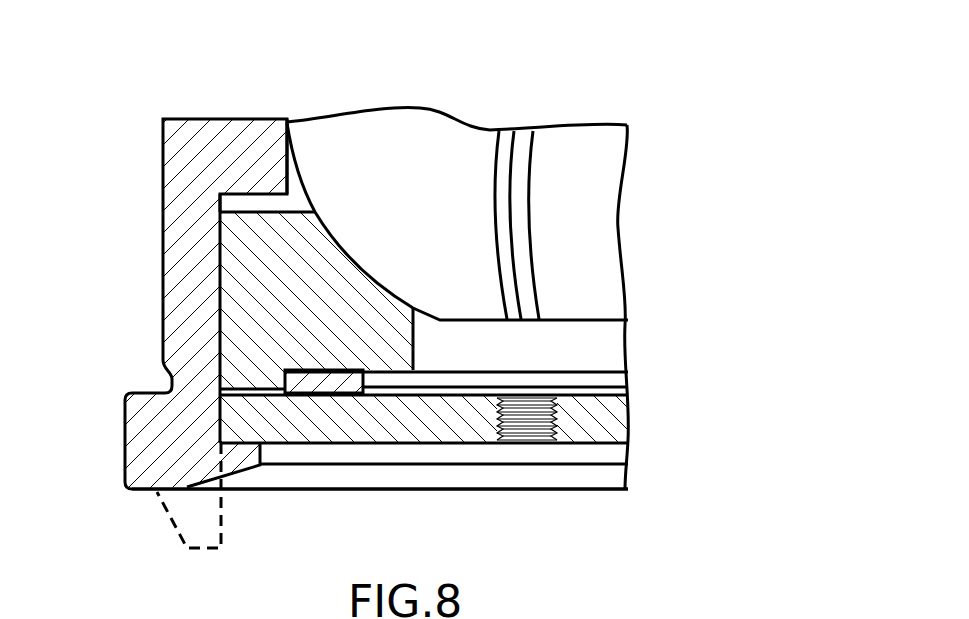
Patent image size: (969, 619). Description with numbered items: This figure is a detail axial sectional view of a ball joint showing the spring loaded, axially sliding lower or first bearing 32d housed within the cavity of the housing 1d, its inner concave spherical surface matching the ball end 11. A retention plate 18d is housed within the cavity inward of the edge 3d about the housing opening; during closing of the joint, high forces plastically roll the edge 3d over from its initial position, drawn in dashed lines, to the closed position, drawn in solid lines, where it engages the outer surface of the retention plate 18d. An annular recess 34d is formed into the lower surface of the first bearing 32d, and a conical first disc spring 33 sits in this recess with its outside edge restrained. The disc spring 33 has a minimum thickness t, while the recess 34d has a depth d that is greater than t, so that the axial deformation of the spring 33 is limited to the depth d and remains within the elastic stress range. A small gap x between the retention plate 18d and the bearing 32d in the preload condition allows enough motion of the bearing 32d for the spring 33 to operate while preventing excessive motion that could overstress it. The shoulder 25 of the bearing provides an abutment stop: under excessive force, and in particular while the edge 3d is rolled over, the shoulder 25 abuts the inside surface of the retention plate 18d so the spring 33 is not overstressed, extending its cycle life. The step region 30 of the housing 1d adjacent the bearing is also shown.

The housing 1d is at (207, 119).
The step 30 is at (220, 203).
The first bearing 32d is at (262, 272).
The shoulder 25 is at (252, 375).
The ball end 11 is at (433, 177).
The first disc annular recess 34d is at (305, 368).
The first disc spring 33 is at (407, 372).
The retention plate 18d is at (573, 443).
The edge 3d is at (257, 470).
The minimum thickness t is at (313, 288).
The depth d is at (867, 370).
The gap x is at (862, 387).